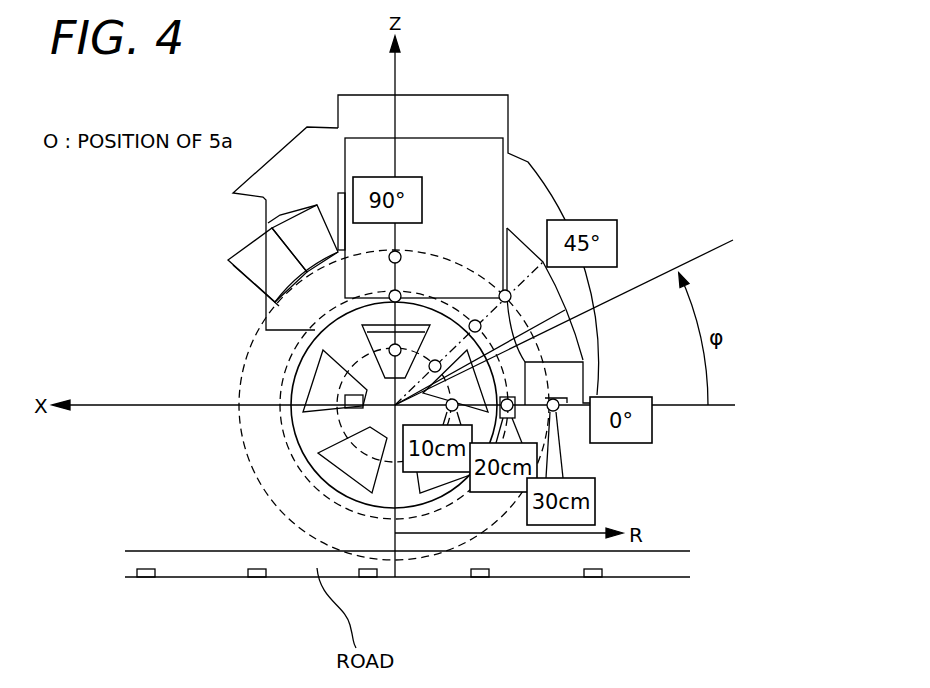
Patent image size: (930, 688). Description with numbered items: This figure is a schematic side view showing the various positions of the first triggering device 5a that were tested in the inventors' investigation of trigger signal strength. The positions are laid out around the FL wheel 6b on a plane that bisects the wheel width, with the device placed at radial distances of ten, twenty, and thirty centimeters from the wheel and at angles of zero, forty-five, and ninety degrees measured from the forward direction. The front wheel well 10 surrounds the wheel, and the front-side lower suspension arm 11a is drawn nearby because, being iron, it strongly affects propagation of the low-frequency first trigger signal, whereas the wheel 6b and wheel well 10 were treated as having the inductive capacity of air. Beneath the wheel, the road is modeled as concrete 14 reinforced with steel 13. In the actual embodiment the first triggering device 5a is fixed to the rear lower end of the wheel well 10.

The front wheel well 10 is at (535, 203).
The first triggering device 5a is at (560, 391).
The FL wheel 6b is at (300, 385).
The front-side lower suspension arm 11a is at (353, 408).
The steel 13 is at (145, 578).
The concrete 14 is at (204, 568).